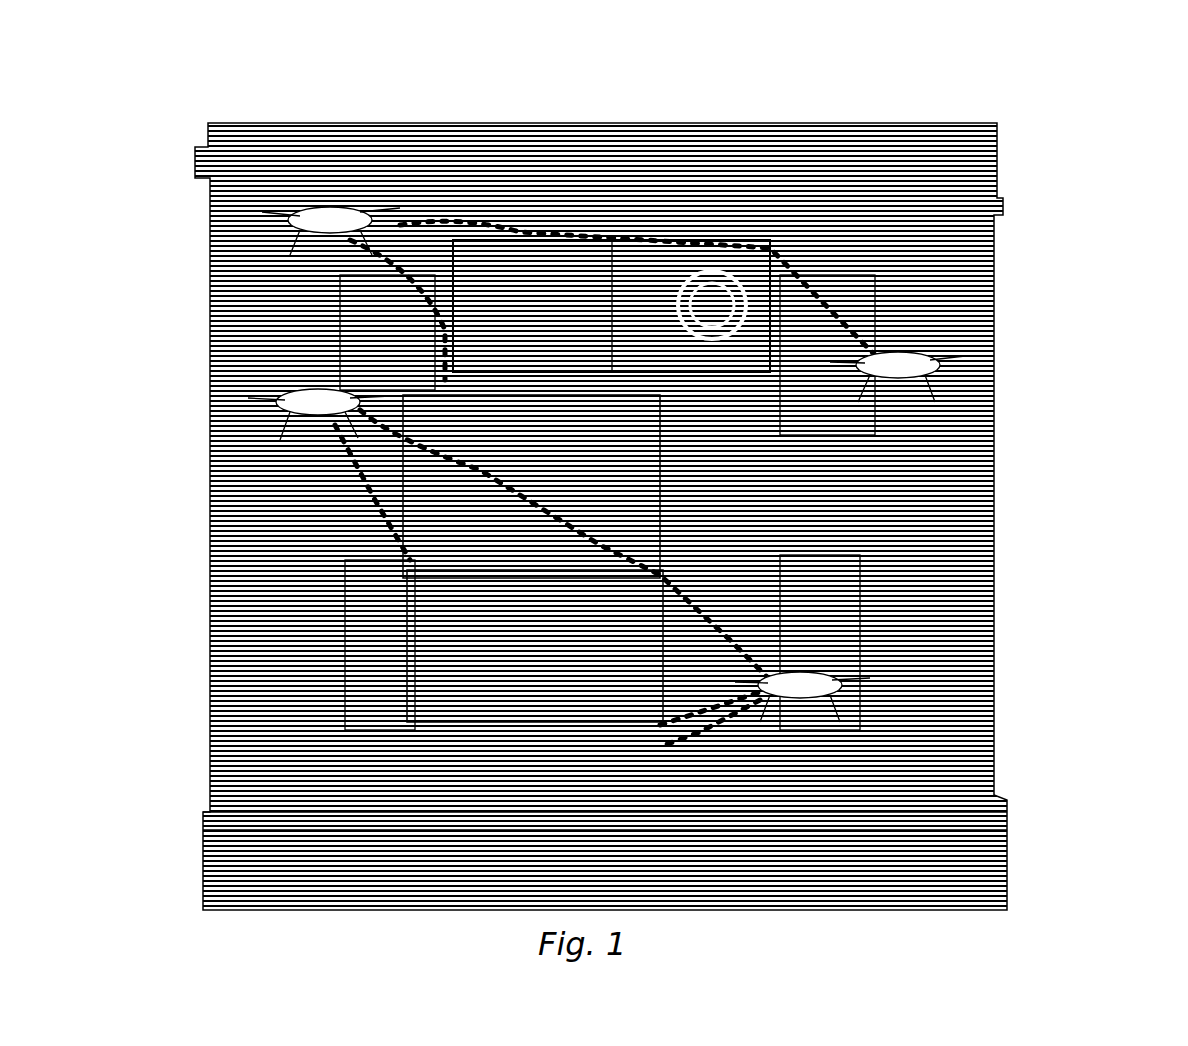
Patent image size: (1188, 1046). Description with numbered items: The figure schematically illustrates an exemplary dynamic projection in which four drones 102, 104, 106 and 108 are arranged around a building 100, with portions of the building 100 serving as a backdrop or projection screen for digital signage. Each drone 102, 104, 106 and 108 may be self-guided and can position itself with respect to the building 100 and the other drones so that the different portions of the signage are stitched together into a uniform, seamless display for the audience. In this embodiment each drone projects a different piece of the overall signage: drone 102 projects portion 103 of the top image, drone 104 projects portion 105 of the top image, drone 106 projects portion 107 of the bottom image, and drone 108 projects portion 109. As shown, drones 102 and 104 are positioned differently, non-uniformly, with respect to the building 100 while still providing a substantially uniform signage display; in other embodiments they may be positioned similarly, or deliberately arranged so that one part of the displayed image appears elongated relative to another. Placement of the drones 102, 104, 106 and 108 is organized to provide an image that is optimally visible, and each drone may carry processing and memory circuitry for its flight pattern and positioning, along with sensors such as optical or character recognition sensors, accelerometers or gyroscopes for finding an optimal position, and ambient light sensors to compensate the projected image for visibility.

The building 100 is at (1015, 130).
The drone 102 is at (312, 205).
The portion of the top image 103 is at (543, 240).
The drone 104 is at (940, 398).
The portion of the top image 105 is at (688, 242).
The drone 106 is at (830, 690).
The portion of the bottom image 107 is at (405, 638).
The drone 108 is at (272, 393).
The portion of the top image 109 is at (400, 507).